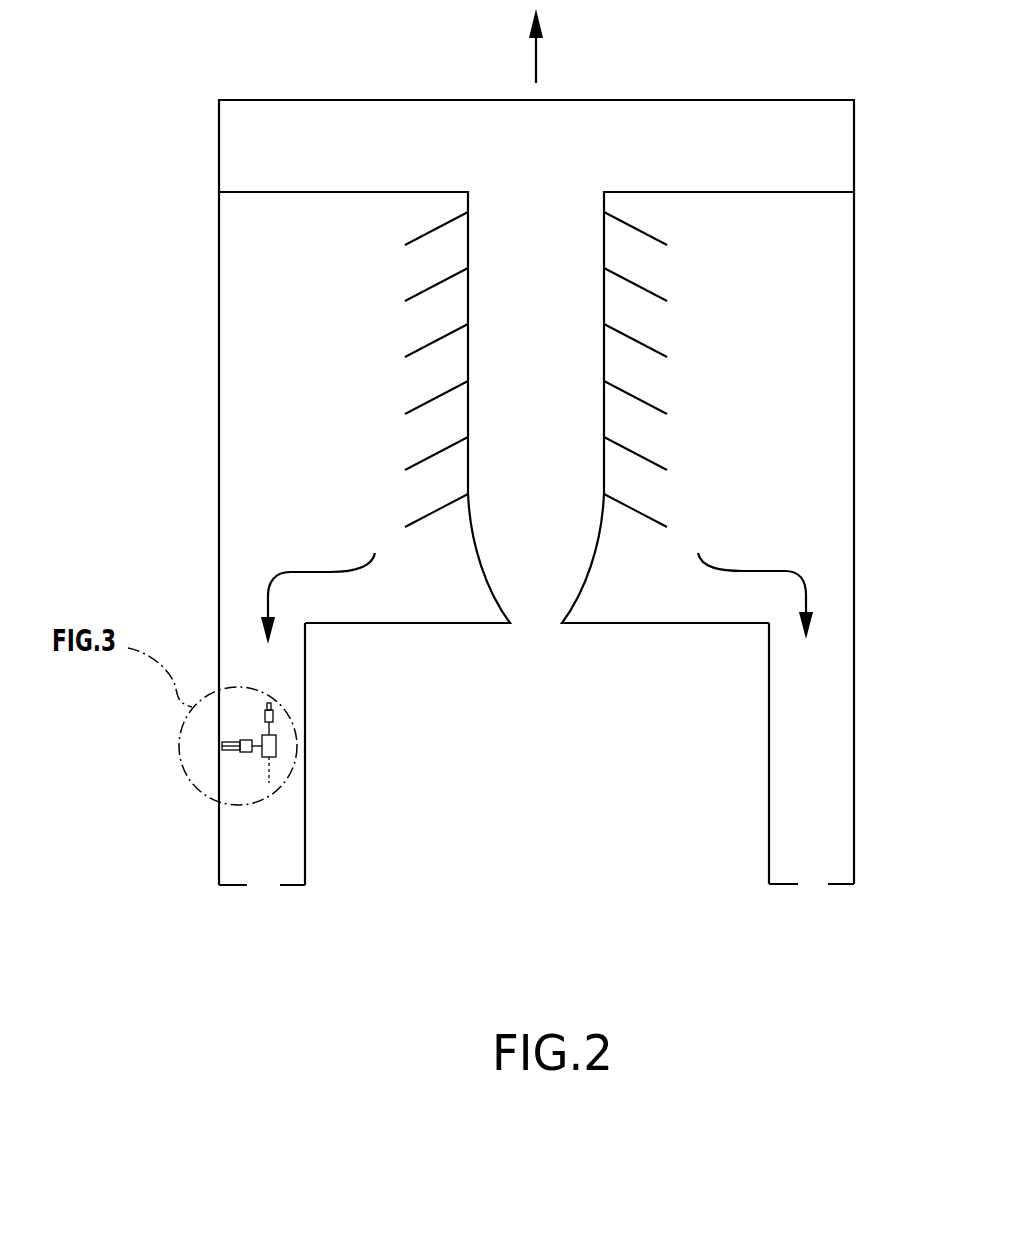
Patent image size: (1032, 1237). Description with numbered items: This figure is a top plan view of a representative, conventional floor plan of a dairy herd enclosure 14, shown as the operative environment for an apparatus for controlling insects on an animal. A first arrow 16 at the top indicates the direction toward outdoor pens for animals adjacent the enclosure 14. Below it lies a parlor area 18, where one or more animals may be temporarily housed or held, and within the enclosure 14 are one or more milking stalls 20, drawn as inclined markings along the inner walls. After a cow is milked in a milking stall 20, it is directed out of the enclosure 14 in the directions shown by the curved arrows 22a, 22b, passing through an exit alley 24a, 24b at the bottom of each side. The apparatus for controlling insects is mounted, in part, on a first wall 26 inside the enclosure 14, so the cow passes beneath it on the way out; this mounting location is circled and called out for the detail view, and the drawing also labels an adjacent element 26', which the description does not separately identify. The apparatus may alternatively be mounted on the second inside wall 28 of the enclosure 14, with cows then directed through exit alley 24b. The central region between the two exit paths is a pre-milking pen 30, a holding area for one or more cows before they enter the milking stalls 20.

The dairy herd enclosure 14 is at (163, 105).
The first arrow 16 is at (536, 66).
The parlor area 18 is at (830, 137).
The milking stalls 20 is at (645, 258).
The curved arrow 22a is at (806, 573).
The curved arrow 22b is at (268, 578).
The exit alley 24a is at (250, 830).
The exit alley 24b is at (830, 795).
The first wall 26 is at (203, 679).
The sensor mounting wall 26' is at (338, 754).
The second inside wall 28 is at (849, 740).
The pre-milking pen 30 is at (533, 715).